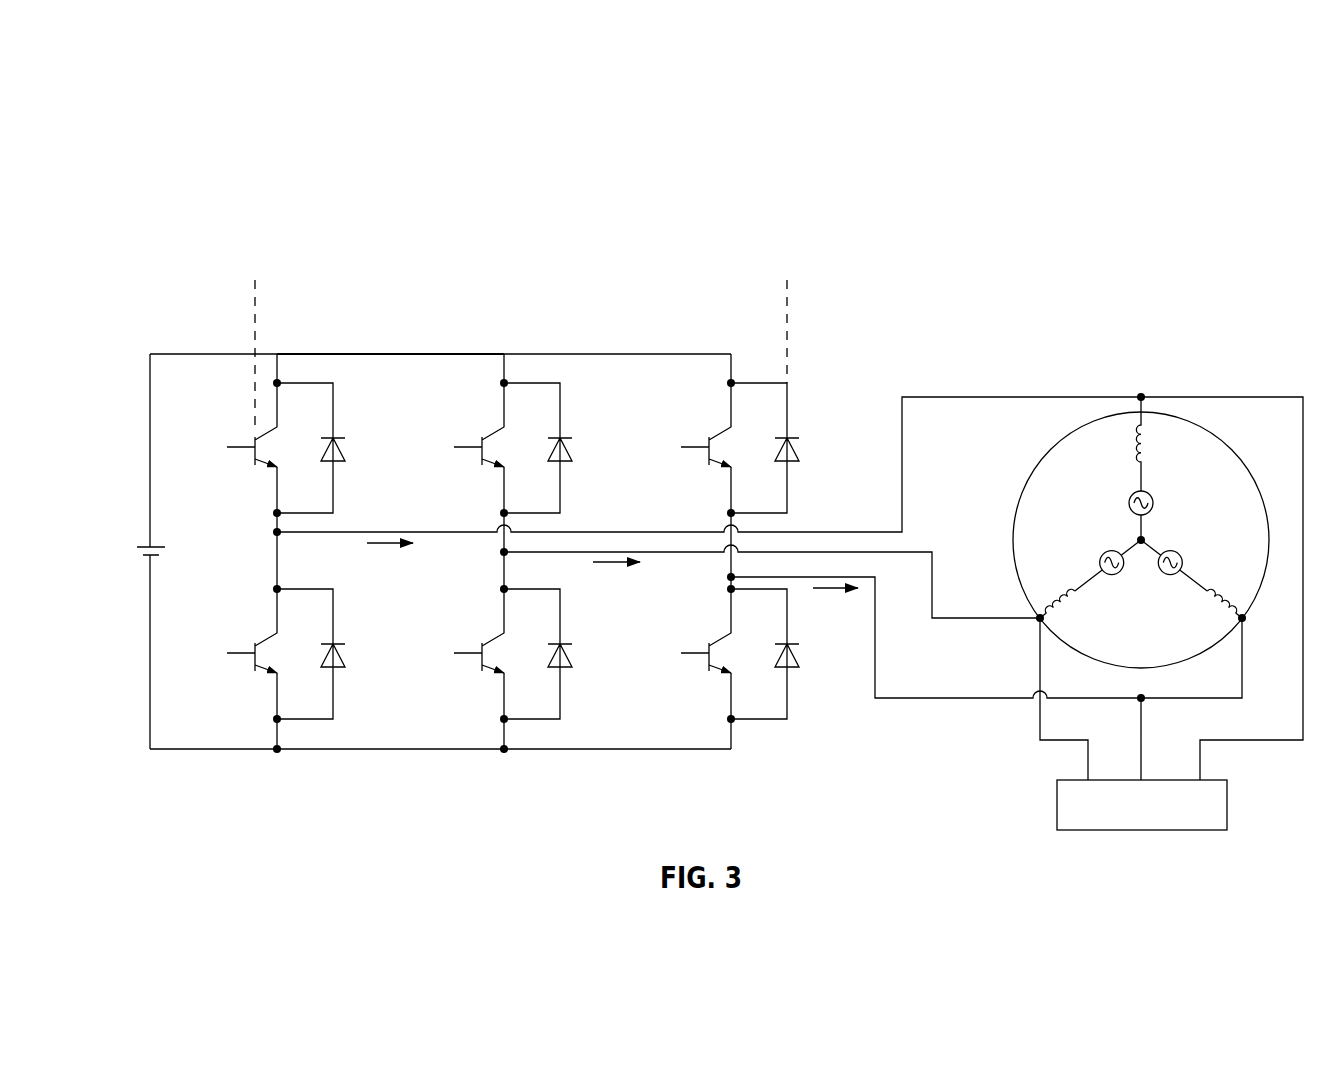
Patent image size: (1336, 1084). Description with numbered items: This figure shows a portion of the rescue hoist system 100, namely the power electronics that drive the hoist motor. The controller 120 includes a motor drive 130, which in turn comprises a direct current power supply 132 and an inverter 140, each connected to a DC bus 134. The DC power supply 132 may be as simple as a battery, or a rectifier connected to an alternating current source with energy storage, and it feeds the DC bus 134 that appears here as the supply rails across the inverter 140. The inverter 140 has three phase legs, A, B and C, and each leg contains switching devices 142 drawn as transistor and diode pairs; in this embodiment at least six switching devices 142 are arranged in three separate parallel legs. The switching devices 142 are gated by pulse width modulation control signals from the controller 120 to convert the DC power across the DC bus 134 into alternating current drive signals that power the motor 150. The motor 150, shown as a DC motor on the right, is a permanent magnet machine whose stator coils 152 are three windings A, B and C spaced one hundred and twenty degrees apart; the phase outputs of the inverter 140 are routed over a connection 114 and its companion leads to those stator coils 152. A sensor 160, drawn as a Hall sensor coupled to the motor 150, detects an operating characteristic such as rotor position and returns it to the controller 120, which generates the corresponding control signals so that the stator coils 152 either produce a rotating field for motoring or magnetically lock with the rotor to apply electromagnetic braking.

The rescue hoist system 100 is at (1249, 178).
The motor phase connection 114 is at (849, 517).
The controller 120 is at (633, 180).
The motor drive 130 is at (747, 228).
The DC power supply 132 is at (177, 336).
The DC bus 134 is at (411, 353).
The inverter 140 is at (787, 280).
The switching devices 142 is at (528, 553).
The motor 150 is at (1187, 376).
The stator coils 152 is at (1141, 521).
The sensor 160 is at (1057, 804).